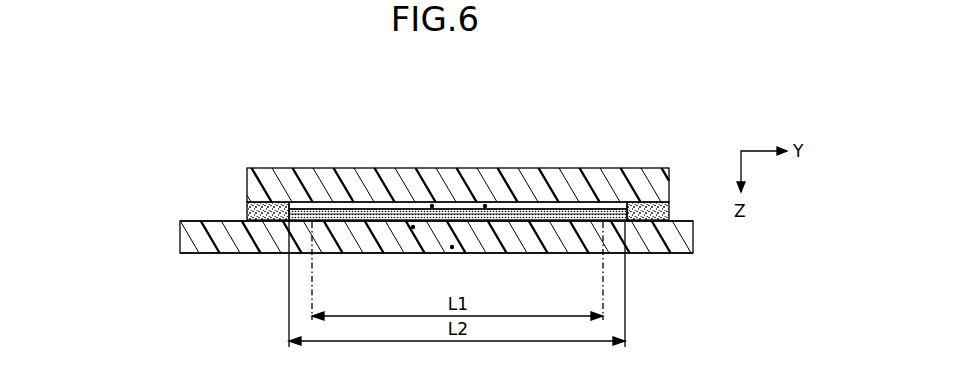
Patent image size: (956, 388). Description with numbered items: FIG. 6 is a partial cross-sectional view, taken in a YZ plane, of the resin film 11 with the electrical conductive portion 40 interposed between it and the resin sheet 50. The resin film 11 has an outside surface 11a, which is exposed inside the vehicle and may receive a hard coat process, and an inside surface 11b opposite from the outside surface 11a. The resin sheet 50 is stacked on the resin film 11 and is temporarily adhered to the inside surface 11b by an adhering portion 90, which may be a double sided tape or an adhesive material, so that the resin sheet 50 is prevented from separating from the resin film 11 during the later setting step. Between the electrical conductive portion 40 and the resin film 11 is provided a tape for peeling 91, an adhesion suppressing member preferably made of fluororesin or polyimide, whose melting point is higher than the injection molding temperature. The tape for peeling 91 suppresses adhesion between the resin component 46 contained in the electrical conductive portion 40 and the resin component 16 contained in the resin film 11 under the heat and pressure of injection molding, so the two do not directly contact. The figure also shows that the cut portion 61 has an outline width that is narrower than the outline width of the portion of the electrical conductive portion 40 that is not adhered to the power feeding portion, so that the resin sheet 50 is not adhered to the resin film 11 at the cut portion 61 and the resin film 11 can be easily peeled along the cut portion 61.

The resin sheet 50 is at (247, 183).
The electrical conductive portion 40 is at (247, 205).
The adhering portion 90 is at (247, 216).
The inside surface 11b is at (210, 221).
The resin film 11 is at (198, 236).
The outside surface 11a is at (210, 253).
The resin component 46 is at (485, 205).
The tape for peeling 91 is at (545, 216).
The resin component 16 is at (452, 248).
The cut portion 61 is at (585, 276).